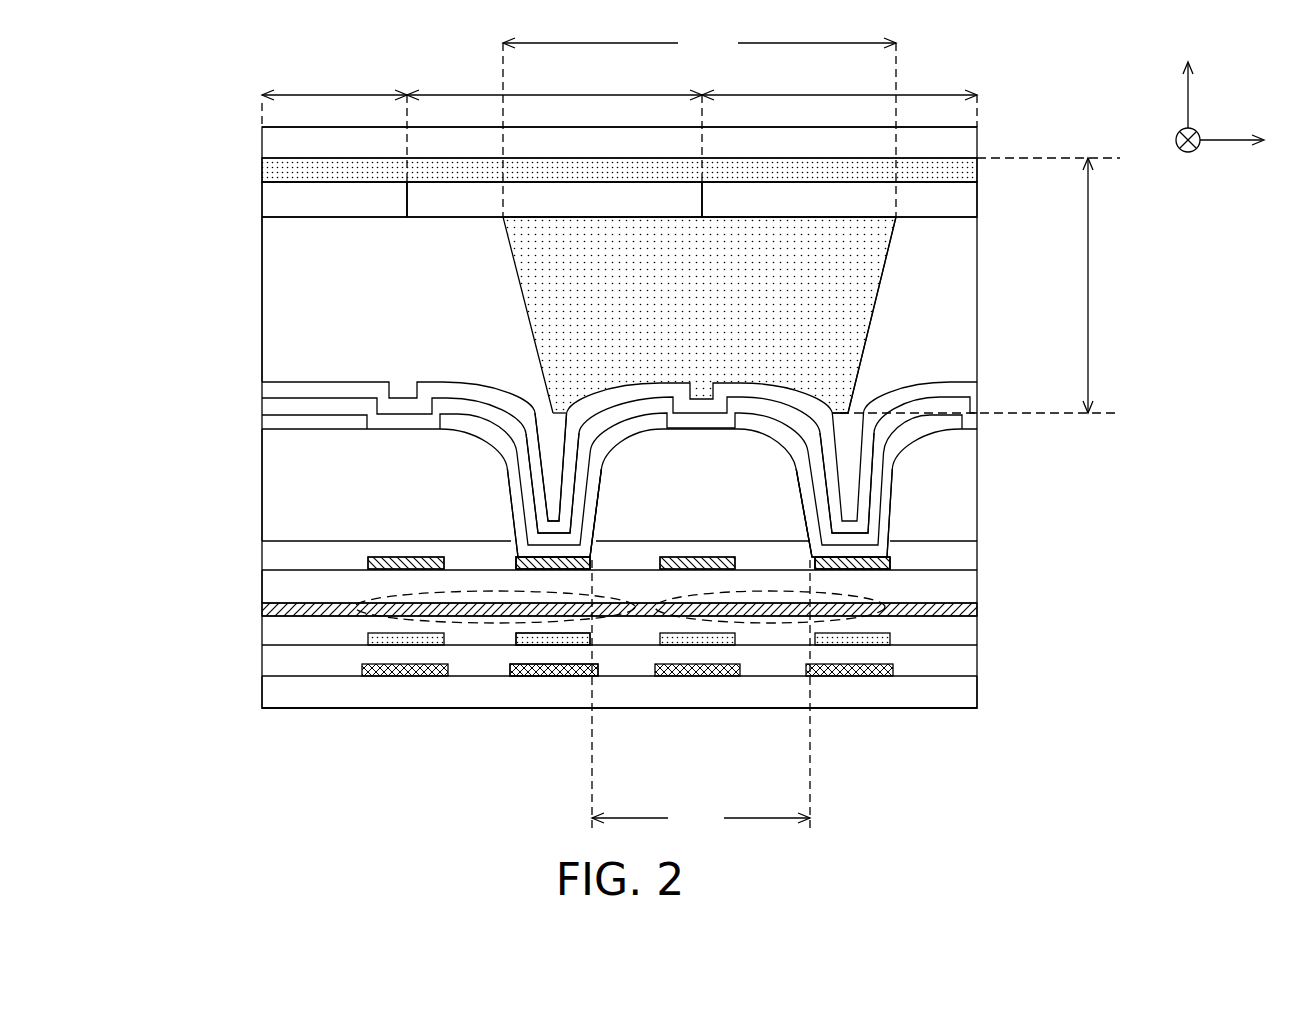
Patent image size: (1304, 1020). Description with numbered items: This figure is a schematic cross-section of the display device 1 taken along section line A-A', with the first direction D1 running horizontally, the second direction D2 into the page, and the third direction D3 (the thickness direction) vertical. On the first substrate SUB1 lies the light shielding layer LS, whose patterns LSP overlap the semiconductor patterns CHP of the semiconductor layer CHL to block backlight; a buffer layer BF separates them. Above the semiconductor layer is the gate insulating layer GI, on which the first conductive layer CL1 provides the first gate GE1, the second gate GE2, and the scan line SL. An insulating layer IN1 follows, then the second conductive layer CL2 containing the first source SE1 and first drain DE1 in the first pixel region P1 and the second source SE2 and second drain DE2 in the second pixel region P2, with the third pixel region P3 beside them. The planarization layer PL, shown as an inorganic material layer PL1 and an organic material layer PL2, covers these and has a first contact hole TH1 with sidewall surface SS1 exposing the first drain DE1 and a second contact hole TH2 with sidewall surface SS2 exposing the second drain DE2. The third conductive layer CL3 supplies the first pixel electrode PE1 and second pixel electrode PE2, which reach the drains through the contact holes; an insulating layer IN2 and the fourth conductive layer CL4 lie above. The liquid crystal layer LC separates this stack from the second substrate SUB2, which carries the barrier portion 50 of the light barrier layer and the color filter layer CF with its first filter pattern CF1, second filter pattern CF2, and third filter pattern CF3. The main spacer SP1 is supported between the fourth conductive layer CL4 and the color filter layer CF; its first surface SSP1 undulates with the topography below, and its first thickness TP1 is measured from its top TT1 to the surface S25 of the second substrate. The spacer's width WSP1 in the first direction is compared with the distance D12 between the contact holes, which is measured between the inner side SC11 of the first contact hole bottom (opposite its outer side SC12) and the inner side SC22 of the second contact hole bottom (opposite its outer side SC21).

The display device 1 is at (1206, 744).
The second substrate SUB2 is at (272, 143).
The barrier portion 50 is at (272, 170).
The surface of the second substrate S25 is at (870, 155).
The color filter layer CF is at (262, 197).
The first filter pattern CF1 is at (423, 203).
The second filter pattern CF2 is at (980, 200).
The third filter pattern CF3 is at (280, 205).
The liquid crystal layer LC is at (280, 280).
The spacer SP1 is at (870, 272).
The first surface SSP1 is at (783, 392).
The top of the main spacer TT1 is at (844, 412).
The first thickness TP1 is at (991, 285).
The width of the spacer WSP1 is at (699, 123).
The first pixel region P1 is at (554, 122).
The second pixel region P2 is at (839, 94).
The third pixel region P3 is at (334, 122).
The fourth conductive layer CL4 is at (262, 384).
The insulating layer IN2 is at (272, 407).
The third conductive layer CL3 is at (262, 422).
The planarization layer PL is at (184, 453).
The organic material layer PL2 is at (278, 468).
The inorganic material layer PL1 is at (290, 541).
The first contact hole TH1 is at (503, 500).
The second contact hole TH2 is at (904, 478).
The sidewall surface of the first contact hole SS1 is at (603, 497).
The sidewall surface of the second contact hole SS2 is at (800, 514).
The inner side of the bottom of the first contact hole SC11 is at (563, 520).
The outer side of the bottom of the first contact hole SC12 is at (518, 567).
The outer side of the bottom of the second contact hole SC21 is at (893, 563).
The inner side of the bottom of the second contact hole SC22 is at (878, 556).
The second conductive layer CL2 is at (365, 562).
The insulating layer IN1 is at (278, 586).
The first conductive layer CL1 is at (262, 607).
The scan line SL is at (980, 607).
The gate insulating layer GI is at (274, 624).
The semiconductor layer CHL is at (363, 636).
The semiconductor pattern CHP is at (517, 645).
The buffer layer BF is at (280, 658).
The light shielding layer LS is at (362, 668).
The pattern of the light shielding layer LSP is at (543, 677).
The first substrate SUB1 is at (288, 700).
The first source SE1 is at (378, 568).
The first gate GE1 is at (473, 623).
The first drain DE1 is at (563, 520).
The first pixel electrode PE1 is at (580, 547).
The second source SE2 is at (675, 564).
The second gate GE2 is at (770, 623).
The second drain DE2 is at (872, 562).
The second pixel electrode PE2 is at (889, 556).
The distance between the first contact hole and the second contact hole D12 is at (701, 696).
The section line A-A' A is at (624, 759).
The first direction D1 is at (1251, 141).
The second direction D2 is at (1190, 163).
The third direction D3 is at (1190, 80).